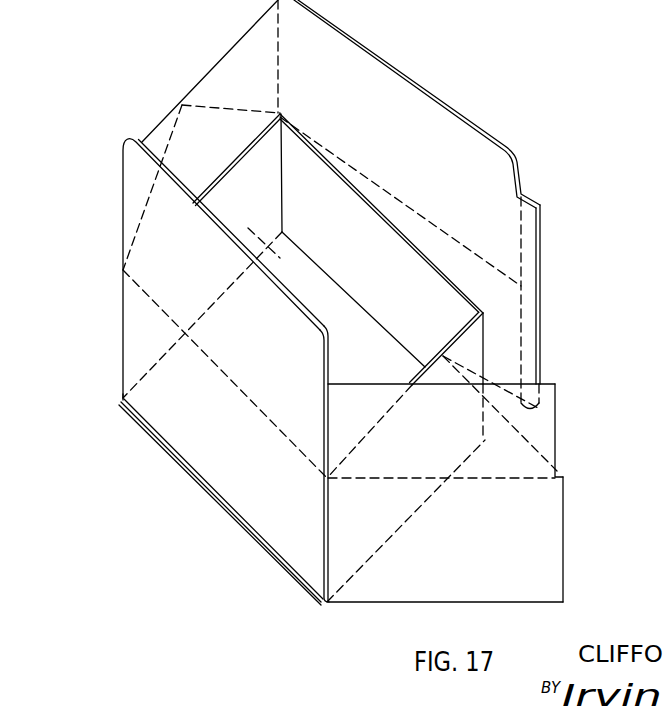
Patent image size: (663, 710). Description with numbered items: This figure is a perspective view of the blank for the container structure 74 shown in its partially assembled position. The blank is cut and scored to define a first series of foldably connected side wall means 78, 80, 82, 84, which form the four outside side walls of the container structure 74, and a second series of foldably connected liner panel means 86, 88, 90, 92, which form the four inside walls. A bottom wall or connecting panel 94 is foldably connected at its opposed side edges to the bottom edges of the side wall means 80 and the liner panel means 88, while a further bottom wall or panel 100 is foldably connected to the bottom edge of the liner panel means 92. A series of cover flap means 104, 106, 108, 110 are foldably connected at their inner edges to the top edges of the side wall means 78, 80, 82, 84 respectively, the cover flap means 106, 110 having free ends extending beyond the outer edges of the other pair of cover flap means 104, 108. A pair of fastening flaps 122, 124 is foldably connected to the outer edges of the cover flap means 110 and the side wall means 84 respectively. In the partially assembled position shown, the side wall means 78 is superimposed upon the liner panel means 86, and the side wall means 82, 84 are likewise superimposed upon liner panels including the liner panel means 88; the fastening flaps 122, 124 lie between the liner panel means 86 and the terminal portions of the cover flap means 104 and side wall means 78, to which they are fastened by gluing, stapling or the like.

The container structure 74 is at (585, 130).
The side wall means 78 is at (547, 560).
The side wall means 80 is at (153, 402).
The side wall means 82 is at (274, 313).
The side wall means 84 is at (507, 348).
The liner panel means 86 is at (472, 357).
The liner panel means 88 is at (412, 297).
The liner panel means 90 is at (273, 196).
The liner panel means 92 is at (193, 468).
The bottom wall or connecting panel 94 is at (160, 438).
The bottom wall or panel 100 is at (378, 377).
The cover flap means 104 is at (545, 433).
The cover flap means 106 is at (143, 240).
The cover flap means 108 is at (222, 163).
The cover flap means 110 is at (475, 152).
The fastening flap 122 is at (523, 230).
The fastening flap 124 is at (542, 318).